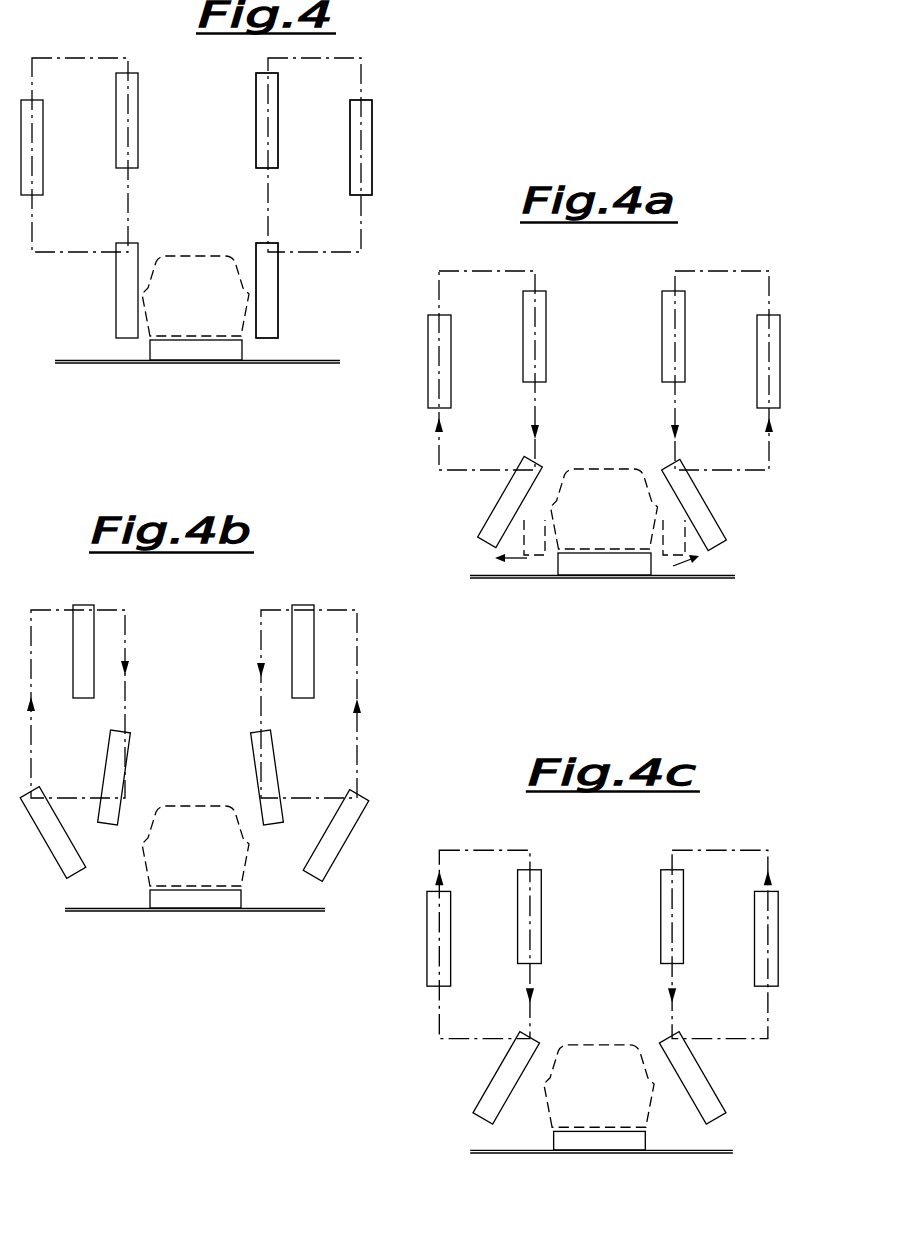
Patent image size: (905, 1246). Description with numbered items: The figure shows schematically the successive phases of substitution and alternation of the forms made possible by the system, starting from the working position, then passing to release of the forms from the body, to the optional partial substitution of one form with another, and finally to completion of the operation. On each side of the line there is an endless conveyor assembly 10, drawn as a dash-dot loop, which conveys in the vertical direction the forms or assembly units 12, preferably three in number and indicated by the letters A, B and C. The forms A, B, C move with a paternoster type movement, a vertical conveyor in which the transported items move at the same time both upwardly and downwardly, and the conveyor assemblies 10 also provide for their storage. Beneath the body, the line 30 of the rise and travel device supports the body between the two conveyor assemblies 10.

In FIG. 4, the endless conveyor assembly 10 is at (368, 231).
In FIG. 4, the forms or assembly units 12 is at (256, 97).
In FIG. 4, the line 30 is at (202, 366).
In FIG. 4, the form A is at (123, 303).
In FIG. 4A, the form A is at (493, 513).
In FIG. 4B, the form A is at (60, 858).
In FIG. 4C, the form A is at (430, 945).
In FIG. 4, the form B is at (133, 125).
In FIG. 4A, the form B is at (548, 312).
In FIG. 4B, the form B is at (128, 745).
In FIG. 4C, the form B is at (490, 1078).
In FIG. 4, the form C is at (40, 147).
In FIG. 4A, the form C is at (432, 370).
In FIG. 4B, the form C is at (86, 622).
In FIG. 4C, the form C is at (530, 890).